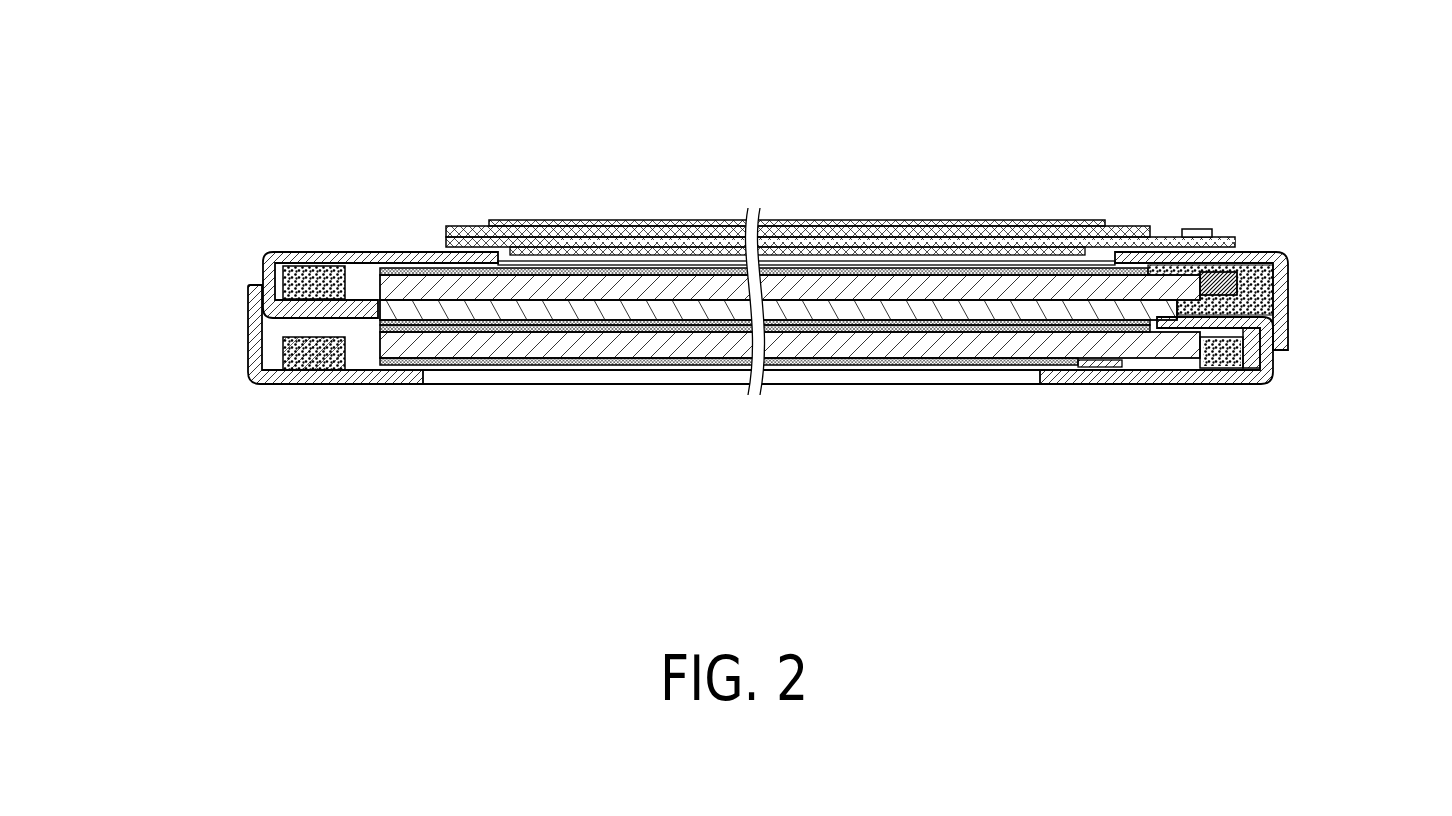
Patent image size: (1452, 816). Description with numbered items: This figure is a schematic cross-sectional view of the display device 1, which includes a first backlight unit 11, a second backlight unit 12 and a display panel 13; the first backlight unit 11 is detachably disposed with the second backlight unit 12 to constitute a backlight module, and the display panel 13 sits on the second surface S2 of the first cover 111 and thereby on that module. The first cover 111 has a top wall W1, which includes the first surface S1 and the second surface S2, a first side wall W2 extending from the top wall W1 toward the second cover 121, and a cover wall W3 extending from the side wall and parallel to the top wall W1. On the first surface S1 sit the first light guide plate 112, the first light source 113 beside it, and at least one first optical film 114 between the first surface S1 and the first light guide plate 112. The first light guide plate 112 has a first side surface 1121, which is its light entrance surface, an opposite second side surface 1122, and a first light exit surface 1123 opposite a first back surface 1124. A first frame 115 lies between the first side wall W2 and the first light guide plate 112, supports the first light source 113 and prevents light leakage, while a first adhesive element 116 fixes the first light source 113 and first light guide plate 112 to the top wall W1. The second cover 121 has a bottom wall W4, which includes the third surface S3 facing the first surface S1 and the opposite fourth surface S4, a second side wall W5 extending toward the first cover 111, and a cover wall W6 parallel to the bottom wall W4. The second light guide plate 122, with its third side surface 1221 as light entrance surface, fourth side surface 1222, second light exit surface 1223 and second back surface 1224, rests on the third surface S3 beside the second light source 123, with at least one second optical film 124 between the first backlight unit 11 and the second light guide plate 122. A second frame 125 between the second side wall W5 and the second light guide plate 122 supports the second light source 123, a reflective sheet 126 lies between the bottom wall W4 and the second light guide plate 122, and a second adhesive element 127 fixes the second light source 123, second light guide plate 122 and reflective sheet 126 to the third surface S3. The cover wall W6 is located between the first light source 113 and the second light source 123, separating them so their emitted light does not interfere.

The display device 1 is at (1283, 22).
The first backlight unit 11 is at (262, 318).
The second backlight unit 12 is at (1273, 317).
The display panel 13 is at (632, 220).
The first cover 111 is at (1297, 133).
The first light guide plate 112 is at (1002, 261).
The first light source 113 is at (1195, 229).
The first optical film 114 is at (940, 246).
The first frame 115 is at (303, 272).
The first adhesive element 116 is at (1172, 237).
The second cover 121 is at (1065, 458).
The second light guide plate 122 is at (940, 366).
The second light source 123 is at (1250, 355).
The second optical film 124 is at (877, 333).
The second frame 125 is at (332, 370).
The reflective sheet 126 is at (812, 365).
The second adhesive element 127 is at (1160, 374).
The first side surface 1121 is at (1238, 294).
The second side surface 1122 is at (380, 288).
The first light exit surface 1123 is at (567, 280).
The first back surface 1124 is at (515, 297).
The third side surface 1221 is at (1210, 365).
The fourth side surface 1222 is at (372, 341).
The second light exit surface 1223 is at (523, 336).
The second back surface 1224 is at (598, 365).
The top wall W1 is at (330, 252).
The first side wall W2 is at (262, 265).
The cover wall W3 is at (262, 328).
The bottom wall W4 is at (1078, 372).
The second side wall W5 is at (1247, 330).
The cover wall W6 is at (1260, 380).
The first surface S1 is at (1265, 252).
The second surface S2 is at (1253, 246).
The third surface S3 is at (1040, 371).
The fourth surface S4 is at (1052, 384).